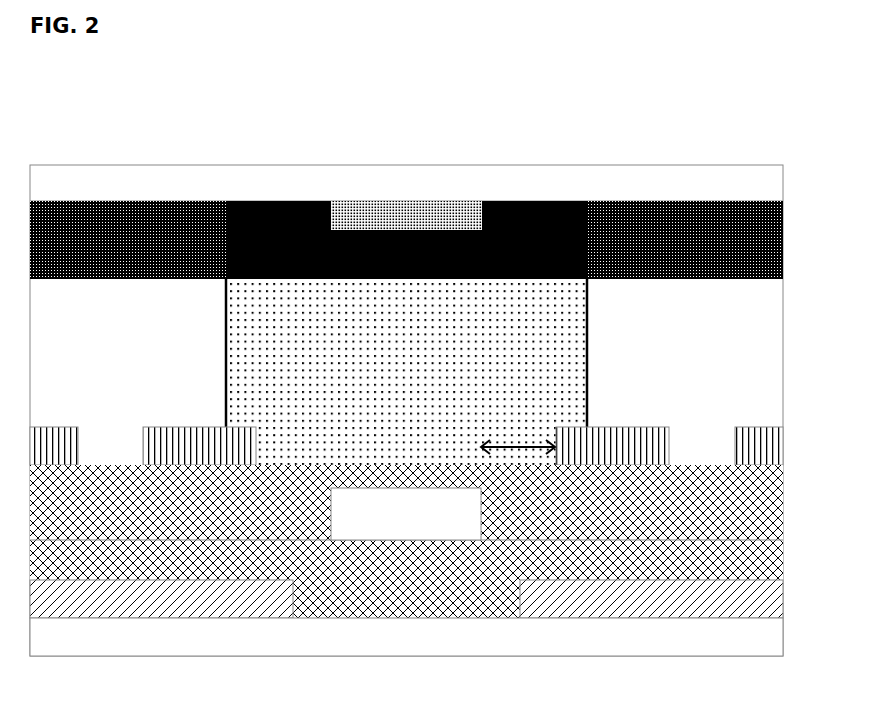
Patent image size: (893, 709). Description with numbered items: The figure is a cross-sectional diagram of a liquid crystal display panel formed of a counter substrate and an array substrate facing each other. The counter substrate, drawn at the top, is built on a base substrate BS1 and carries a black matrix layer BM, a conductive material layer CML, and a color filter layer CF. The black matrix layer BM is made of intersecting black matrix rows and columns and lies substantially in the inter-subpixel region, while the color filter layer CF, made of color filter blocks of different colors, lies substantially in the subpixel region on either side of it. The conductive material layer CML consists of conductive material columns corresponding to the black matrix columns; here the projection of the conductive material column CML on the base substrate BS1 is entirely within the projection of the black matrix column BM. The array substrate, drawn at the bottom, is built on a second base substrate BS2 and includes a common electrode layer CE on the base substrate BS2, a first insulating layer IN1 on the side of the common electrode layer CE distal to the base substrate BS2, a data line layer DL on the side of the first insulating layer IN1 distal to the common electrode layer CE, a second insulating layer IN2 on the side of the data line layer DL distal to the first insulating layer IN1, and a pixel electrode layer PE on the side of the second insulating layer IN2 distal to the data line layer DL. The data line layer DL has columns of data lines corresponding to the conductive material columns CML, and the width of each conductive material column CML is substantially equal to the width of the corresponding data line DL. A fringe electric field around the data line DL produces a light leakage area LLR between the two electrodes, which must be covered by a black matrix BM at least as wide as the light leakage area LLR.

The base substrate BS1 is at (406, 408).
The color filter layer CF is at (406, 241).
The black matrix layer BM is at (406, 240).
The conductive material layer CML is at (393, 208).
The light leakage area LLR is at (497, 322).
The pixel electrode layer PE is at (406, 449).
The second insulating layer IN2 is at (406, 502).
The first insulating layer IN1 is at (406, 579).
The data line layer DL is at (406, 515).
The common electrode layer CE is at (406, 602).
The base substrate BS2 is at (406, 641).